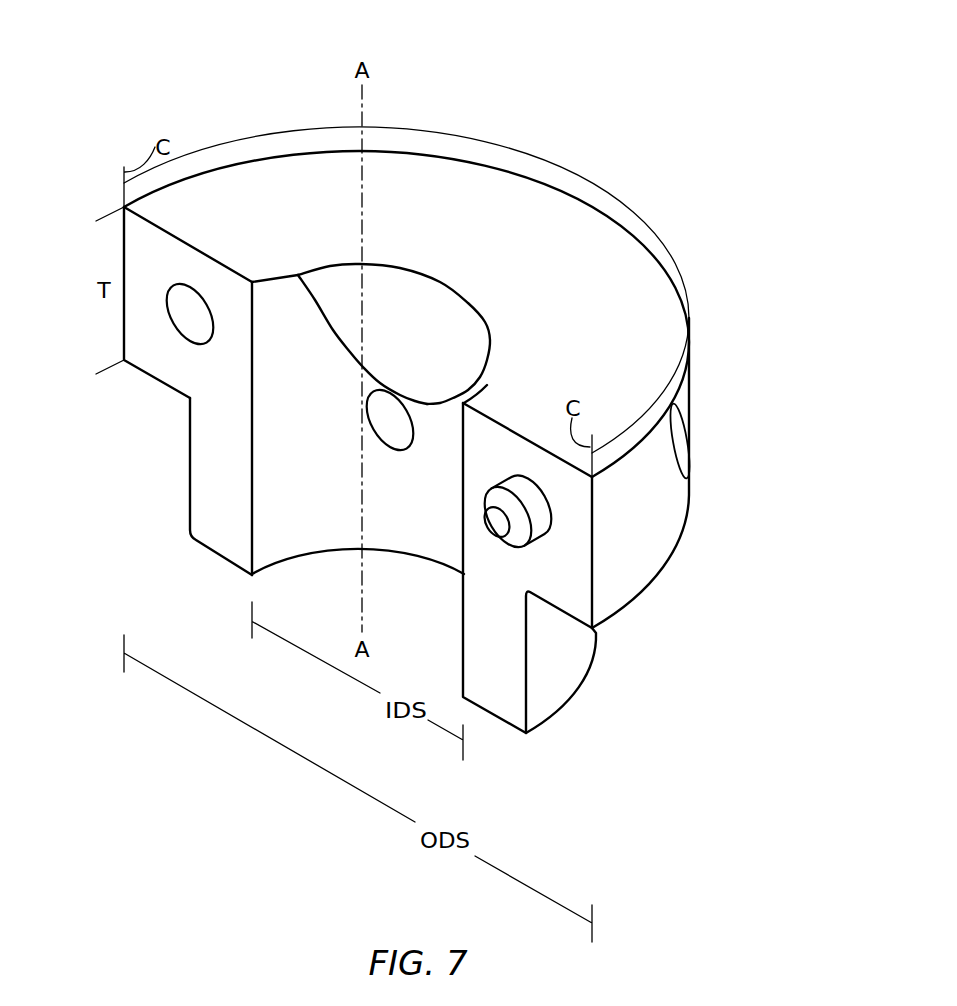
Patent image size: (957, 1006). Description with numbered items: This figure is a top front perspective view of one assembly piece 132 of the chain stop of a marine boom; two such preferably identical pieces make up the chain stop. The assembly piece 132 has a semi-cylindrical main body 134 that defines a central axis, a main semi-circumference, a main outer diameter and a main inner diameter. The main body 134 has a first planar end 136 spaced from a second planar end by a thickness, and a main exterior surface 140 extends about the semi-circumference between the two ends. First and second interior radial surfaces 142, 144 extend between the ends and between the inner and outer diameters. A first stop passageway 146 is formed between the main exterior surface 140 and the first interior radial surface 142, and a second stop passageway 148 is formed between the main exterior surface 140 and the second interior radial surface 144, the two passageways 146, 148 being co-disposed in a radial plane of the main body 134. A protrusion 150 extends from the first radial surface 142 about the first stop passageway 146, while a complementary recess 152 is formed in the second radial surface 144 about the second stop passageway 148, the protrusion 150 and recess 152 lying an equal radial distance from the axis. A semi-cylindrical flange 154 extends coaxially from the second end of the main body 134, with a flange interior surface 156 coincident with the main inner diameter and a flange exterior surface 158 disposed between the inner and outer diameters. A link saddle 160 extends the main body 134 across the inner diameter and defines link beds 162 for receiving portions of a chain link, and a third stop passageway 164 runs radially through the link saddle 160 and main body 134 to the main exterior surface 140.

The assembly piece 132 is at (600, 98).
The semi-cylindrical main body 134 is at (645, 292).
The first planar end 136 is at (299, 198).
The main exterior surface 140 is at (635, 568).
The first interior radial surface 142 is at (578, 583).
The second interior radial surface 144 is at (160, 357).
The first stop passageway 146 is at (497, 529).
The second stop passageway 148 is at (197, 335).
The protrusion 150 is at (537, 514).
The recess 152 is at (167, 326).
The semi-cylindrical flange 154 is at (186, 520).
The flange interior surface 156 is at (405, 562).
The flange exterior surface 158 is at (587, 663).
The link saddle 160 is at (449, 327).
The link bed 162 is at (302, 375).
The third stop passageway 164 is at (395, 420).